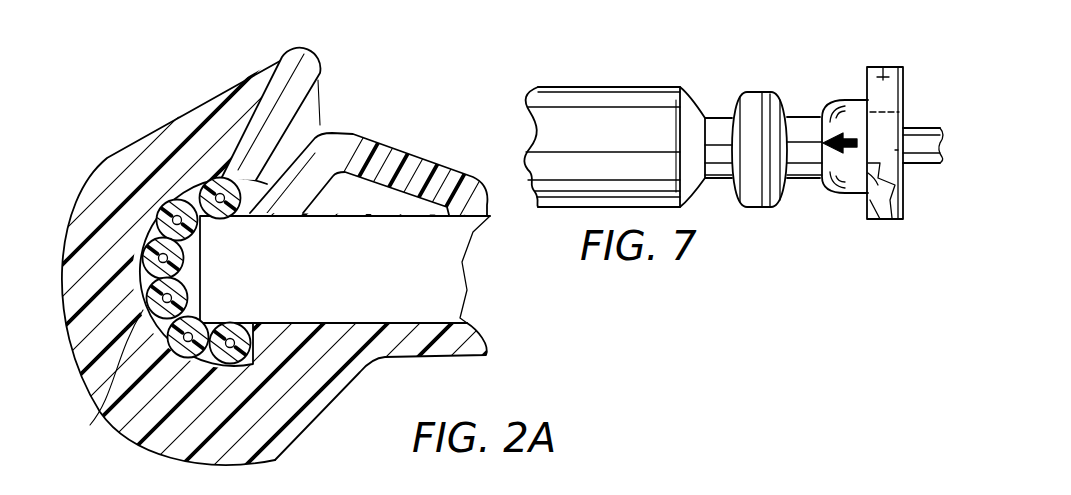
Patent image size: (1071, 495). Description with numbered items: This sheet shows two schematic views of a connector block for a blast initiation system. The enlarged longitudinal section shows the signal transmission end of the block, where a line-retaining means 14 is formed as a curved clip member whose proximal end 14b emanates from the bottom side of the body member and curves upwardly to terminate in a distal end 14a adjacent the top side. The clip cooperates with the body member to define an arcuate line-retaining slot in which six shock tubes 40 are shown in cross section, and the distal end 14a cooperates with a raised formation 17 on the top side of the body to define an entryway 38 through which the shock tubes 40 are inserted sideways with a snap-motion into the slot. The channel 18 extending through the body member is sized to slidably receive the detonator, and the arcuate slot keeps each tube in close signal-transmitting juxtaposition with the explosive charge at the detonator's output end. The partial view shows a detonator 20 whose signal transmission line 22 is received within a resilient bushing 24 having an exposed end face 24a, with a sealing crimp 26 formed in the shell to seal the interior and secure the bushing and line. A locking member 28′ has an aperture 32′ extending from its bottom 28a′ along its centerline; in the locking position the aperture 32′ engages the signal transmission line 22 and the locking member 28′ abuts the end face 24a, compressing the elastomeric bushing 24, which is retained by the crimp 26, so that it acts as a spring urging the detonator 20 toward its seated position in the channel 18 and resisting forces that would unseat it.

In FIG. 2A, the line-retaining means 14 is at (118, 177).
In FIG. 2A, the distal end 14a is at (287, 63).
In FIG. 2A, the proximal end 14b is at (317, 368).
In FIG. 2A, the raised formation 17 is at (370, 143).
In FIG. 2A, the channel 18 is at (402, 276).
In FIG. 2A, the entryway 38 is at (295, 135).
In FIG. 2A, the shock tubes 40 is at (222, 176).
In FIG. 7, the detonator 20 is at (595, 107).
In FIG. 7, the signal transmission line 22 is at (923, 147).
In FIG. 7, the resilient bushing 24 is at (837, 188).
In FIG. 7, the end face 24a is at (866, 176).
In FIG. 7, the sealing crimp 26 is at (718, 127).
In FIG. 7, the locking member 28′ is at (882, 78).
In FIG. 7, the bottom 28a′ is at (873, 219).
In FIG. 7, the aperture 32′ is at (887, 219).